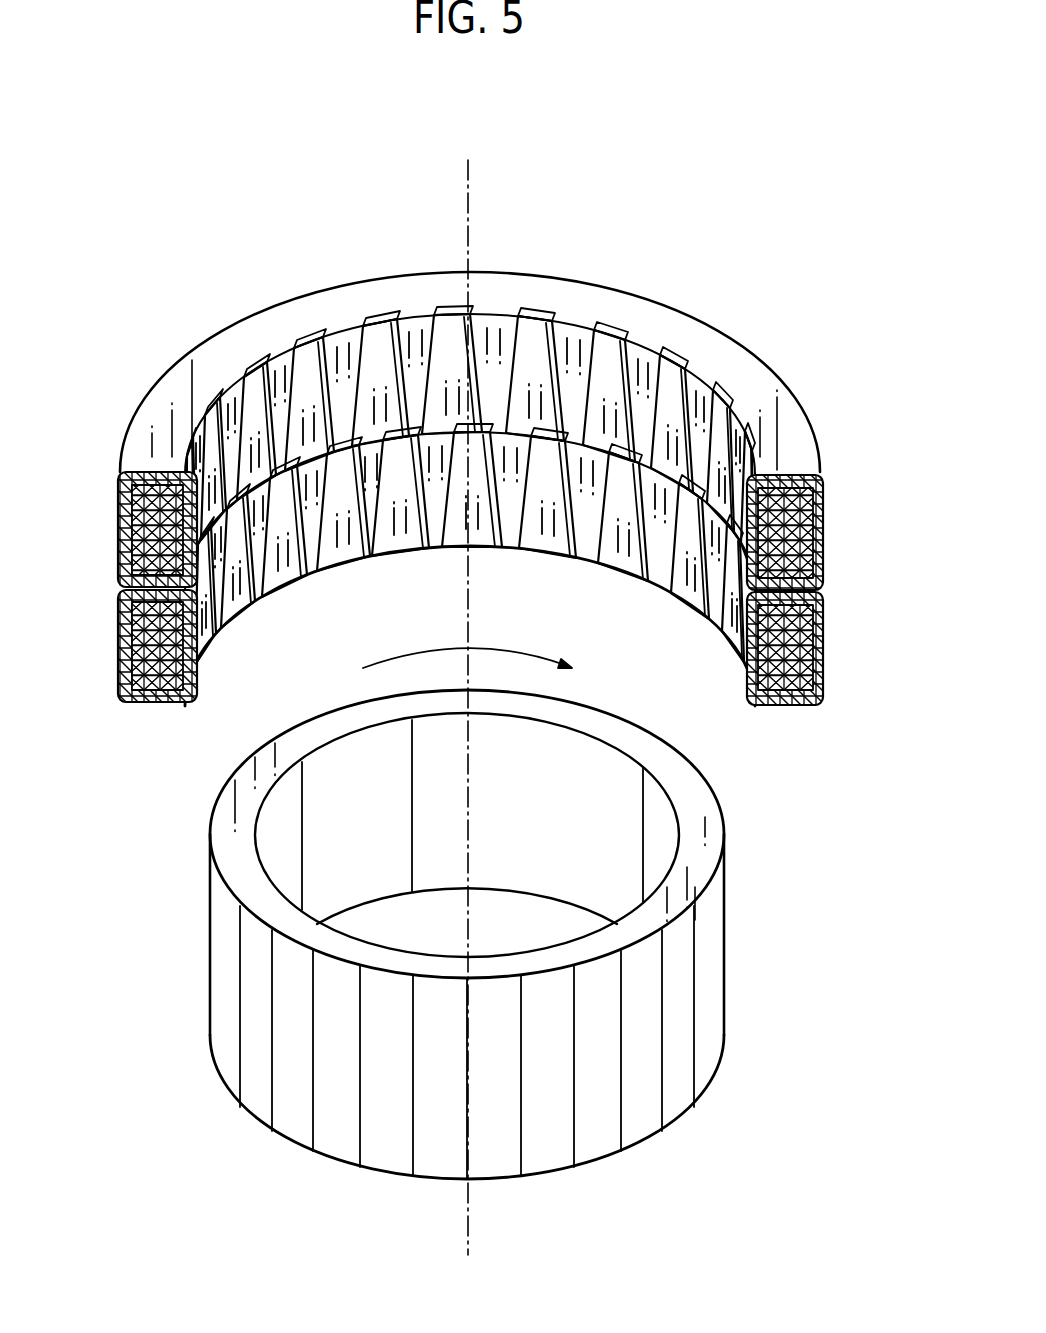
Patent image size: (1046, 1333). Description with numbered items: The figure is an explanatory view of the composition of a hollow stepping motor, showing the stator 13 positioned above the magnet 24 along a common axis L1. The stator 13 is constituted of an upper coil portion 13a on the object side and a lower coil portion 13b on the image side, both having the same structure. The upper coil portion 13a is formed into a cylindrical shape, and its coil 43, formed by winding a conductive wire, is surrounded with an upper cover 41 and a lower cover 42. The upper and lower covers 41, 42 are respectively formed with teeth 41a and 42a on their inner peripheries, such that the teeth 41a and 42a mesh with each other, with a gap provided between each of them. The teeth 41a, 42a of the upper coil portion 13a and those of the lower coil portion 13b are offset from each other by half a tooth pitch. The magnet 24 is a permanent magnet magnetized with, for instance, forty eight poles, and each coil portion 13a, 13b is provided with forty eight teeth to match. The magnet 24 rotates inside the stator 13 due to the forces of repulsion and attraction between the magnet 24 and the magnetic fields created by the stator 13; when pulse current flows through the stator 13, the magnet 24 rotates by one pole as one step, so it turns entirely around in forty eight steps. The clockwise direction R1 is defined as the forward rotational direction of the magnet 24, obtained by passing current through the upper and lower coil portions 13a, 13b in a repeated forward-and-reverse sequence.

The stator 13 is at (712, 322).
The upper coil portion 13a is at (820, 535).
The lower coil portion 13b is at (820, 648).
The magnet 24 is at (724, 950).
The upper cover 41 is at (120, 530).
The teeth 41a is at (348, 362).
The lower cover 42 is at (121, 585).
The teeth 42a is at (312, 363).
The coil 43 is at (810, 503).
The rotation axis L1 is at (462, 197).
The clockwise direction R1 is at (489, 670).